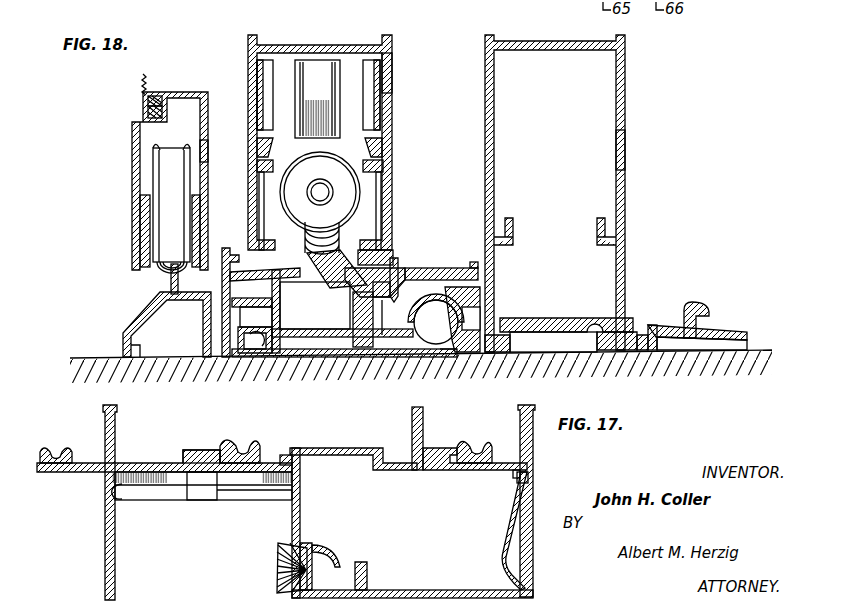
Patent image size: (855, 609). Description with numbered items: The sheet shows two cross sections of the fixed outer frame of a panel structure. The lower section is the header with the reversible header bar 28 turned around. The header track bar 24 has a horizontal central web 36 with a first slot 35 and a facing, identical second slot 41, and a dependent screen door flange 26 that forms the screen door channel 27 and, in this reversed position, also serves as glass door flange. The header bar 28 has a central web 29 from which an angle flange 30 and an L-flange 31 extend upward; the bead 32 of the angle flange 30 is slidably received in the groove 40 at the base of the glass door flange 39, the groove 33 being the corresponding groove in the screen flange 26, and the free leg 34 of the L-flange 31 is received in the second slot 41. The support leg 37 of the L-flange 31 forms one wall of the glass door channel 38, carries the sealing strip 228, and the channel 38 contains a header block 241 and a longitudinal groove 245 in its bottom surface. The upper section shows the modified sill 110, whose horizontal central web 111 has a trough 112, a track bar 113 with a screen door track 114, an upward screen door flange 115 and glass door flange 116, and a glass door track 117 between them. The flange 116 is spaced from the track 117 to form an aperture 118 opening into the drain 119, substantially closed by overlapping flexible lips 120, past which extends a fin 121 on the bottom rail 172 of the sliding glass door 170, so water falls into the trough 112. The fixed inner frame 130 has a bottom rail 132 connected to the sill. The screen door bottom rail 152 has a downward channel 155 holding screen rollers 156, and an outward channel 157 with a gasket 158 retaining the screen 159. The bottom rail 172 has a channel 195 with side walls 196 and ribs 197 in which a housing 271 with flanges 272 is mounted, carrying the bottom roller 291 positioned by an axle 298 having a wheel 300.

In FIG. 18, the sill 110 is at (647, 299).
In FIG. 18, the horizontal central web 111 is at (450, 366).
In FIG. 18, the trough 112 is at (417, 333).
In FIG. 18, the track bar 113 is at (133, 322).
In FIG. 18, the screen door track 114 is at (170, 283).
In FIG. 18, the screen door flange 115 is at (226, 248).
In FIG. 18, the glass door flange 116 is at (443, 270).
In FIG. 18, the glass door track 117 is at (283, 286).
In FIG. 18, the longitudinal aperture 118 is at (399, 262).
In FIG. 18, the drain 119 is at (382, 302).
In FIG. 18, the flexible lips 120 is at (353, 318).
In FIG. 18, the fin 121 is at (392, 286).
In FIG. 18, the fixed inner frame 130 is at (627, 93).
In FIG. 18, the bottom rail 132 is at (625, 153).
In FIG. 18, the bottom rail 152 is at (134, 164).
In FIG. 18, the channel 155 is at (204, 148).
In FIG. 18, the screen rollers 156 is at (171, 162).
In FIG. 18, the channel 157 is at (160, 97).
In FIG. 18, the gasket 158 is at (148, 111).
In FIG. 18, the screen 159 is at (140, 78).
In FIG. 18, the second movable inner frame 170 is at (404, 38).
In FIG. 18, the bottom rail 172 is at (394, 76).
In FIG. 18, the bottom rail channel 195 is at (381, 200).
In FIG. 18, the side walls 196 is at (260, 100).
In FIG. 18, the ribs 197 is at (262, 146).
In FIG. 18, the housing 271 is at (355, 70).
In FIG. 18, the flanges 272 is at (262, 168).
In FIG. 18, the bottom roller 291 is at (304, 254).
In FIG. 18, the axle 298 is at (313, 200).
In FIG. 18, the wheel 300 is at (325, 170).
In FIG. 17, the header track bar 24 is at (355, 435).
In FIG. 17, the screen door flange 26 is at (116, 578).
In FIG. 17, the screen door channel 27 is at (75, 492).
In FIG. 17, the reversible header bar 28 is at (402, 532).
In FIG. 17, the central web 29 is at (418, 590).
In FIG. 17, the angle flange 30 is at (509, 538).
In FIG. 17, the L-flange 31 is at (311, 500).
In FIG. 17, the bead 32 is at (518, 485).
In FIG. 17, the groove 33 is at (120, 497).
In FIG. 17, the free leg 34 is at (287, 452).
In FIG. 17, the first slot 35 is at (369, 455).
In FIG. 17, the central web 36 is at (210, 458).
In FIG. 17, the support leg 37 is at (302, 528).
In FIG. 17, the glass door channel 38 is at (158, 523).
In FIG. 17, the glass door flange 39 is at (531, 557).
In FIG. 17, the groove 40 is at (531, 480).
In FIG. 17, the second slot 41 is at (280, 462).
In FIG. 17, the sealing strip 228 is at (283, 575).
In FIG. 17, the header block 241 is at (232, 478).
In FIG. 17, the longitudinal groove 245 is at (224, 455).